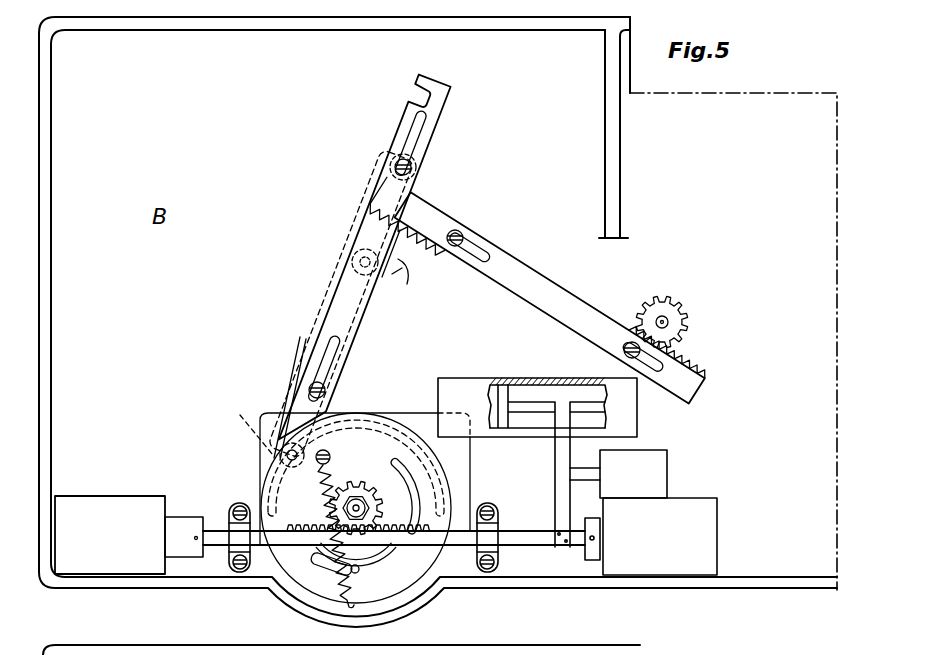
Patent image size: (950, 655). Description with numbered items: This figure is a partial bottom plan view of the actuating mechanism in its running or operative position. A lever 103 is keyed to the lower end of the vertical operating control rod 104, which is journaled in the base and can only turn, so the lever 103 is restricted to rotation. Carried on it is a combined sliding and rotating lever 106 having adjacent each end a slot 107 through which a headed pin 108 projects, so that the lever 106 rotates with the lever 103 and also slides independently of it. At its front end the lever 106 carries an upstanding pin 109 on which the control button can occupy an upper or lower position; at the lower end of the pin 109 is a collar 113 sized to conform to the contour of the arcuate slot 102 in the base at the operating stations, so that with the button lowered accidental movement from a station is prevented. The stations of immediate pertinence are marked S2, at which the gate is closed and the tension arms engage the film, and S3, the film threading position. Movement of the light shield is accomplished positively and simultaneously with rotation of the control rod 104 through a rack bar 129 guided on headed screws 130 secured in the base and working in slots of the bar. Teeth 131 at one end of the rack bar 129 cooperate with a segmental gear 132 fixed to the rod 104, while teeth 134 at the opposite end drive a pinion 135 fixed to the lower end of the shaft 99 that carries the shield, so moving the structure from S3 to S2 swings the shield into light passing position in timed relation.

The shaft 99 is at (664, 318).
The arcuate slot 102 is at (386, 422).
The lever 103 is at (338, 300).
The operating control rod 104 is at (352, 263).
The combined sliding and rotating lever 106 is at (338, 327).
The slot 107 is at (417, 141).
The headed pin 108 is at (395, 164).
The upstanding pin 109 is at (283, 459).
The collar 113 is at (278, 451).
The rack bar 129 is at (512, 263).
The headed screw 130 is at (461, 232).
The teeth 131 is at (401, 224).
The segmental gear 132 is at (399, 275).
The teeth 134 is at (690, 362).
The pinion 135 is at (682, 304).
The operating station S2 is at (284, 453).
The operating station S3 is at (447, 459).